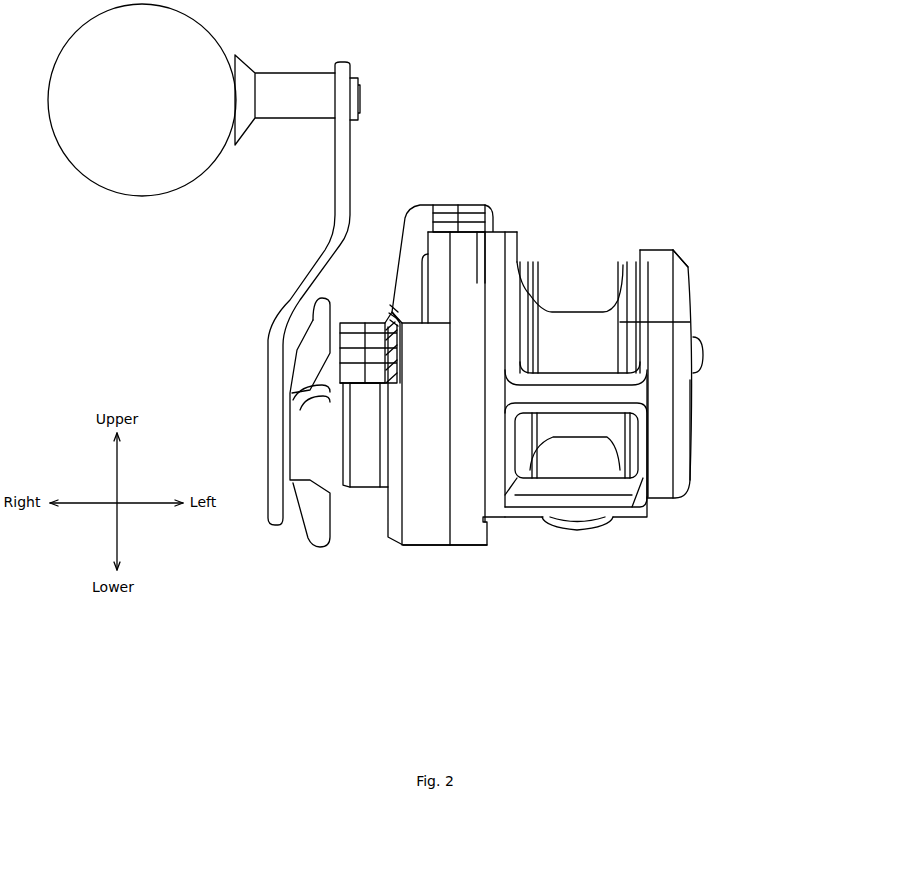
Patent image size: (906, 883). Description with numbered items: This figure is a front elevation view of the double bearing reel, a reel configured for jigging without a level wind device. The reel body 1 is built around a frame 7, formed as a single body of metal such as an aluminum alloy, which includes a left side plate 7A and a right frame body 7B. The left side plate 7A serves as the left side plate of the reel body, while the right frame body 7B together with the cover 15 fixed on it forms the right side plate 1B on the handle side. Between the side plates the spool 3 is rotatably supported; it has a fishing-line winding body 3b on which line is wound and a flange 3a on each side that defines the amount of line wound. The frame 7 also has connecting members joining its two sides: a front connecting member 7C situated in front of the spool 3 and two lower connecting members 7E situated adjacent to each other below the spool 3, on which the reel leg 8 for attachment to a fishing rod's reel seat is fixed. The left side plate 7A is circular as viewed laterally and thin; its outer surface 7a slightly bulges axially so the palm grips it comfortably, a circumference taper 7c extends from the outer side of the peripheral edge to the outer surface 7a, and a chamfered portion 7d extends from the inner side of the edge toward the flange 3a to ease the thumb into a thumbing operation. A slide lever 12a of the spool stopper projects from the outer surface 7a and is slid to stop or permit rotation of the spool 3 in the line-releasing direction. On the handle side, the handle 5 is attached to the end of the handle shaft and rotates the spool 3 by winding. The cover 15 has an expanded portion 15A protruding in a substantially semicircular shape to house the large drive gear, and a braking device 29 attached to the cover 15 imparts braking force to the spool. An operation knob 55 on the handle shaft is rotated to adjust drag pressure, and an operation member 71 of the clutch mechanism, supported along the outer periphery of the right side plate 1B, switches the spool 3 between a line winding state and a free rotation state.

The reel body 1 is at (707, 165).
The right side plate 1B is at (435, 553).
The spool 3 is at (597, 309).
The flange 3a is at (518, 262).
The fishing-line winding body 3b is at (690, 322).
The handle 5 is at (342, 160).
The frame 7 is at (667, 487).
The left side plate 7A is at (680, 243).
The outer surface 7a is at (697, 390).
The right frame body 7B is at (517, 246).
The front connecting member 7C is at (612, 395).
The circumference taper 7c is at (681, 268).
The chamfered portion 7d is at (643, 250).
The lower connecting members 7E is at (620, 488).
The reel leg 8 is at (572, 530).
The slide lever 12a is at (704, 350).
The cover 15 is at (467, 247).
The expanded portion 15A is at (430, 477).
The braking device 29 is at (365, 322).
The operation knob 55 is at (308, 348).
The operation member 71 is at (448, 213).